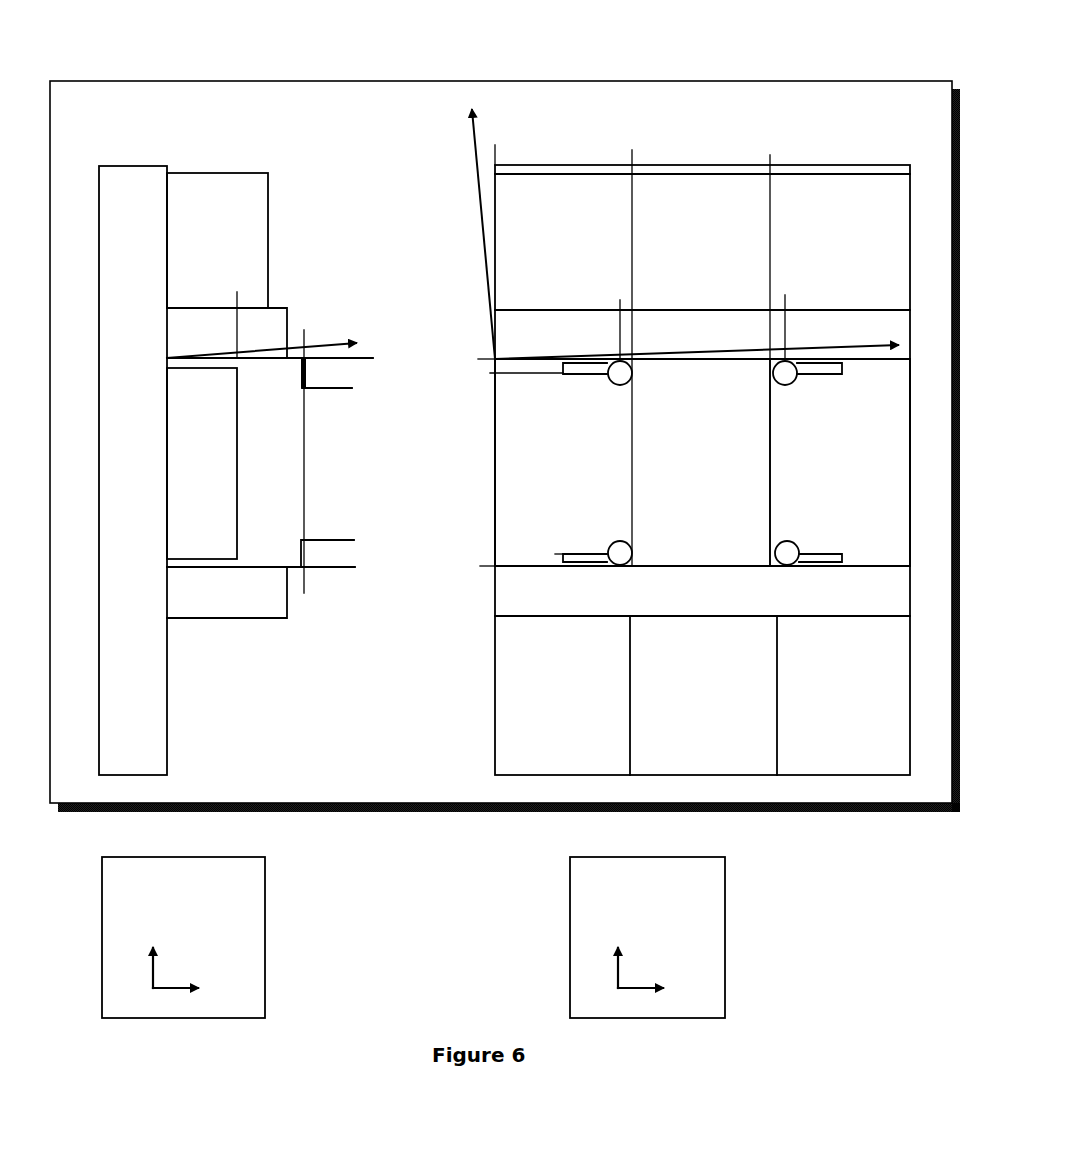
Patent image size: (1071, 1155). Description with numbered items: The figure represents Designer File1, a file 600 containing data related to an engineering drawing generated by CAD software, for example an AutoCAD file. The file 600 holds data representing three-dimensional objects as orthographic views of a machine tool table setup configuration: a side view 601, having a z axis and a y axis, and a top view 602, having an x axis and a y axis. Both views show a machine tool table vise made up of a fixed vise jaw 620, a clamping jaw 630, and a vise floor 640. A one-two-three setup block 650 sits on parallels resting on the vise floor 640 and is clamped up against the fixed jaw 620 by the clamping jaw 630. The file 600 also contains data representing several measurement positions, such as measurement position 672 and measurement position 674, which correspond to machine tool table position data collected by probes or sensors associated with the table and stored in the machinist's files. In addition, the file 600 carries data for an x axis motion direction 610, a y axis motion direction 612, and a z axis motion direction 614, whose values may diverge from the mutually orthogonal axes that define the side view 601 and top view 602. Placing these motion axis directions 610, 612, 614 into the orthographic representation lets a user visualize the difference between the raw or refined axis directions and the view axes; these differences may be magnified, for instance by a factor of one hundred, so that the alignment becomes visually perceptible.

The file 600 is at (92, 108).
The side view 601 is at (181, 634).
The top view 602 is at (477, 667).
The x axis motion direction 610 is at (872, 345).
The y axis motion direction 612 is at (475, 133).
The z axis motion direction 614 is at (345, 342).
The fixed vise jaw 620 is at (535, 333).
The clamping jaw 630 is at (535, 583).
The vise floor 640 is at (167, 482).
The 1-2-3 setup block 650 is at (720, 467).
The measurement position 672 is at (780, 376).
The measurement position 674 is at (784, 554).